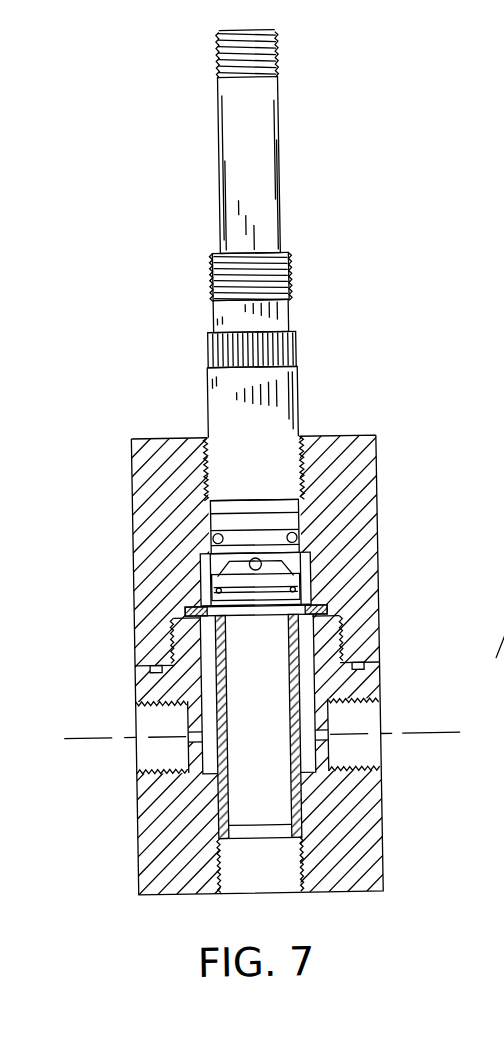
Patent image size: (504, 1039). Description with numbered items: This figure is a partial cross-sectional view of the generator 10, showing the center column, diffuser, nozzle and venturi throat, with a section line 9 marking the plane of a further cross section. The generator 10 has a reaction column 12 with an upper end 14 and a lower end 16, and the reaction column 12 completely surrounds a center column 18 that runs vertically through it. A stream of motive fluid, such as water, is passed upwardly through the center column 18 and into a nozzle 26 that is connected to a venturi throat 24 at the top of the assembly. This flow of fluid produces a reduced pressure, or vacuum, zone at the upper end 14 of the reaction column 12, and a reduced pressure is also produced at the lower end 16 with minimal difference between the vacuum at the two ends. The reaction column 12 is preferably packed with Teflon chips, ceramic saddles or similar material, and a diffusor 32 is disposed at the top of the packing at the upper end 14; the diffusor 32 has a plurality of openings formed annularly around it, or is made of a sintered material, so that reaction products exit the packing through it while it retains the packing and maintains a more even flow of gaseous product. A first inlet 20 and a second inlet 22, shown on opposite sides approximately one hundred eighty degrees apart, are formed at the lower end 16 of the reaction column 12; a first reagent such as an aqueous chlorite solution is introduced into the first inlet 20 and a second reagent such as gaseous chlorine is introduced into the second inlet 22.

The generator 10 is at (106, 618).
The reaction column 12 is at (378, 514).
The upper end 14 is at (133, 456).
The lower end 16 is at (133, 830).
The center column 18 is at (297, 801).
The first inlet 20 is at (146, 753).
The second inlet 22 is at (363, 747).
The venturi throat 24 is at (295, 303).
The nozzle 26 is at (200, 589).
The diffusor 32 is at (328, 609).
The section line 9- 9 is at (86, 720).